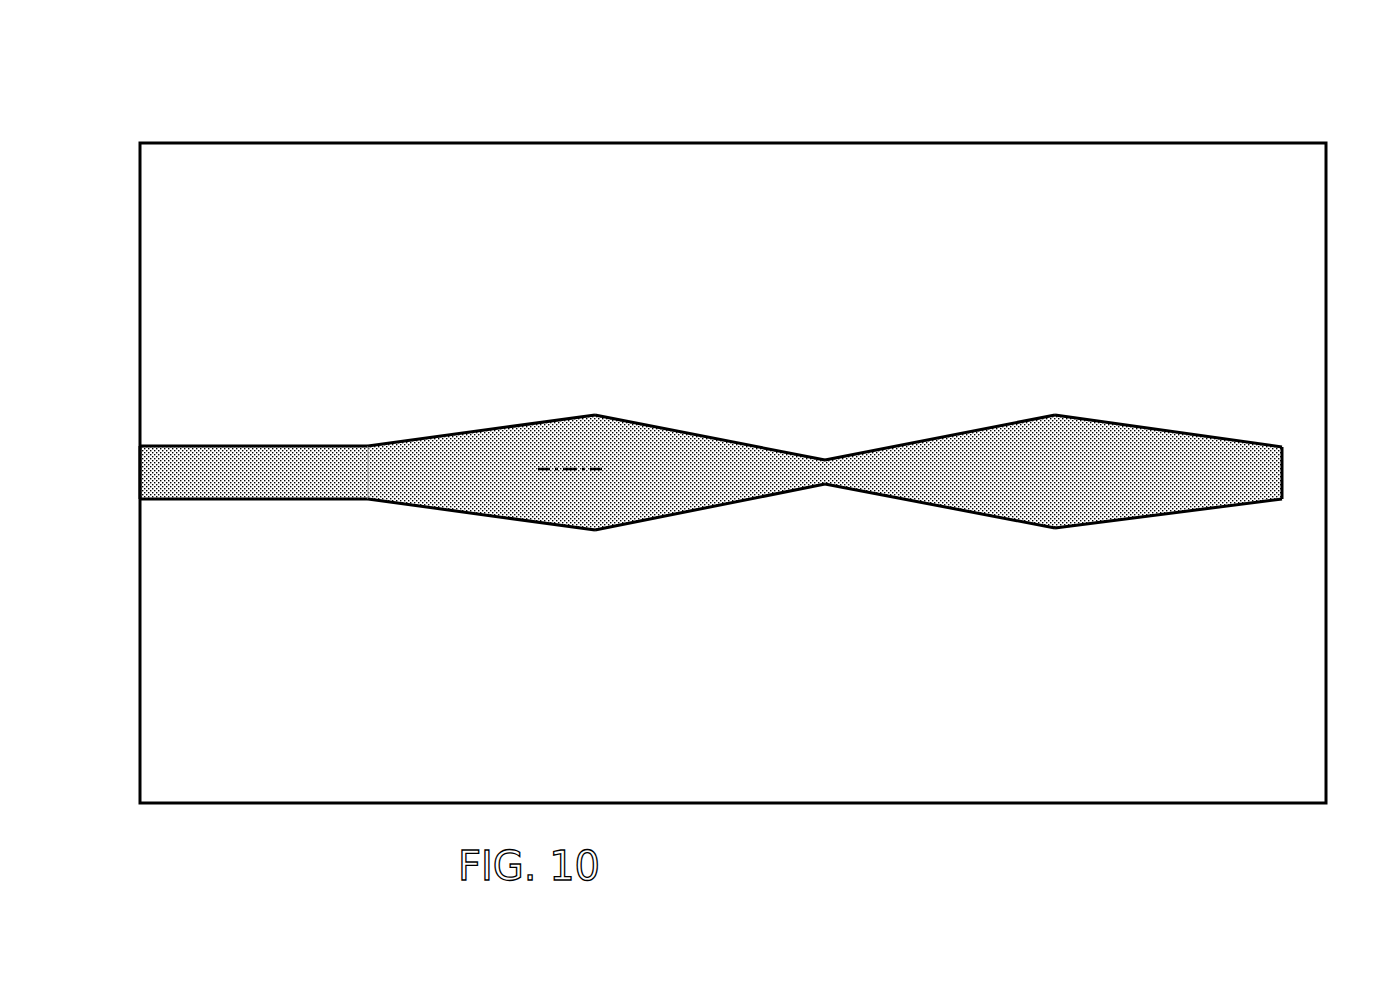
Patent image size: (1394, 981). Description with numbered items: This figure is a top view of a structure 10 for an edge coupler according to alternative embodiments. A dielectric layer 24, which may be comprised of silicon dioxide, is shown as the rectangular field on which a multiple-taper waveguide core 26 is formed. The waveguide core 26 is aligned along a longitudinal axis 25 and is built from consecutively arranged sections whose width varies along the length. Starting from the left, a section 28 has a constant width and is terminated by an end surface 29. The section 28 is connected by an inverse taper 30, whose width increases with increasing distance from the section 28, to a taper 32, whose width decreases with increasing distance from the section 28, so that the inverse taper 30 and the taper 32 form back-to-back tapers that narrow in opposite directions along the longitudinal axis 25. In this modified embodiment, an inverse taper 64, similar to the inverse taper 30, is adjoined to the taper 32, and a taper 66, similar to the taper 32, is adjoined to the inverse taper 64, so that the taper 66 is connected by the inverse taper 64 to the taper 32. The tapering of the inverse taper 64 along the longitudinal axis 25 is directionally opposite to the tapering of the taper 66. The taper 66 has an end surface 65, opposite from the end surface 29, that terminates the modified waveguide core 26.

The structure 10 is at (701, 433).
The dielectric layer 24 is at (208, 725).
The longitudinal axis 25 is at (574, 469).
The multiple-taper waveguide core 26 is at (885, 336).
The section 28 is at (263, 472).
The end surface 29 is at (140, 472).
The inverse taper 30 is at (482, 493).
The taper 32 is at (714, 487).
The inverse taper 64 is at (976, 484).
The end surface 65 is at (1282, 473).
The taper 66 is at (1206, 487).